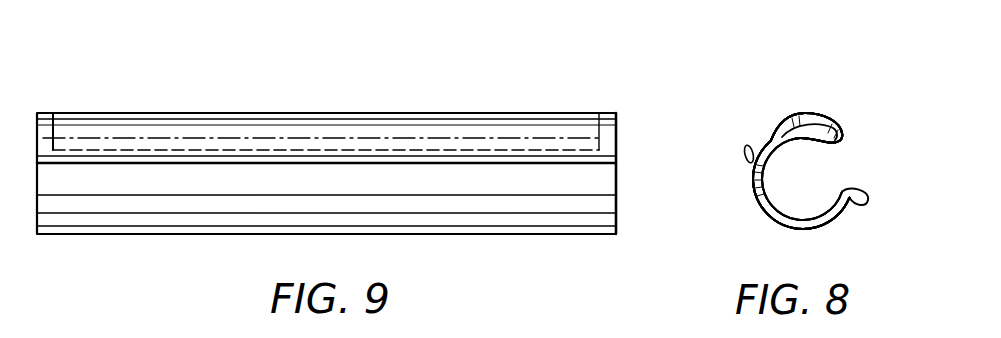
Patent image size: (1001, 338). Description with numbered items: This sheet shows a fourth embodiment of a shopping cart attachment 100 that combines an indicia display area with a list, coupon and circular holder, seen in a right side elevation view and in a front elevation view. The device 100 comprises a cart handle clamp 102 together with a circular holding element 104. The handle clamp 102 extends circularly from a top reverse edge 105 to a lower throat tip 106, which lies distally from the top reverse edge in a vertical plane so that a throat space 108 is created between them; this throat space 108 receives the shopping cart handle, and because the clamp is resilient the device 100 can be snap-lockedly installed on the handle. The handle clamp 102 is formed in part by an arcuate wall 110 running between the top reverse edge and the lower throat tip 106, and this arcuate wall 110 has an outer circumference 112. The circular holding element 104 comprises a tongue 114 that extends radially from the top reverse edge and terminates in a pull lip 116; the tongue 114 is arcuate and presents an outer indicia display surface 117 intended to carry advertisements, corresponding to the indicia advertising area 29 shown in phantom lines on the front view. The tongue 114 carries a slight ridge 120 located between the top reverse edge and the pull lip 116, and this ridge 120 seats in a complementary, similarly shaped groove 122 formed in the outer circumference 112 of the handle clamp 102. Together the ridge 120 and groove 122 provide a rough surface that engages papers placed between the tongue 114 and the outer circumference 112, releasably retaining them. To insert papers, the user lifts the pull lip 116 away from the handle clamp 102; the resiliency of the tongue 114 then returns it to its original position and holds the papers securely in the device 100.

In FIG. 9, the shopping cart attachment device 100 is at (368, 182).
In FIG. 8, the shopping cart attachment device 100 is at (779, 144).
In FIG. 9, the indicia advertising area 29 is at (601, 128).
In FIG. 9, the circular holding element 104 is at (623, 128).
In FIG. 8, the cart handle clamp 102 is at (794, 236).
In FIG. 8, the top reverse edge 105 is at (843, 129).
In FIG. 8, the lower throat tip 106 is at (860, 212).
In FIG. 8, the throat space 108 is at (746, 149).
In FIG. 8, the arcuate wall 110 is at (768, 223).
In FIG. 8, the outer circumference 112 is at (755, 200).
In FIG. 8, the tongue 114 is at (750, 136).
In FIG. 8, the pull lip 116 is at (745, 160).
In FIG. 8, the outer indicia display surface 117 is at (801, 138).
In FIG. 8, the ridge 120 is at (757, 133).
In FIG. 8, the groove 122 is at (802, 179).